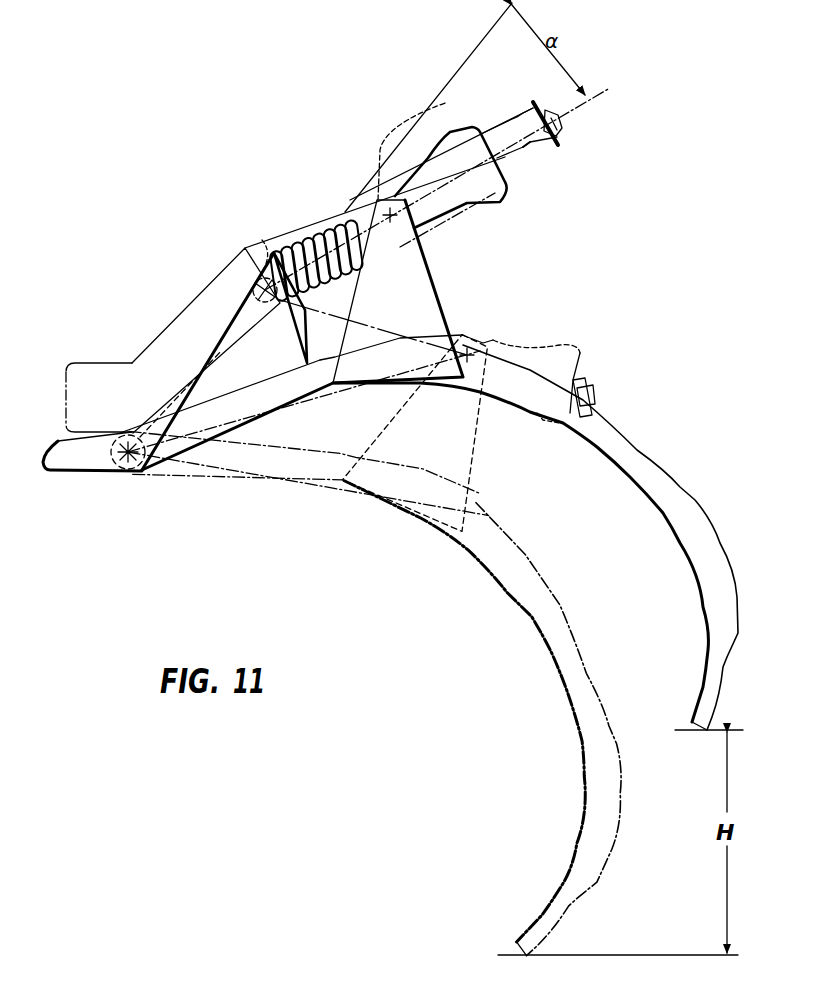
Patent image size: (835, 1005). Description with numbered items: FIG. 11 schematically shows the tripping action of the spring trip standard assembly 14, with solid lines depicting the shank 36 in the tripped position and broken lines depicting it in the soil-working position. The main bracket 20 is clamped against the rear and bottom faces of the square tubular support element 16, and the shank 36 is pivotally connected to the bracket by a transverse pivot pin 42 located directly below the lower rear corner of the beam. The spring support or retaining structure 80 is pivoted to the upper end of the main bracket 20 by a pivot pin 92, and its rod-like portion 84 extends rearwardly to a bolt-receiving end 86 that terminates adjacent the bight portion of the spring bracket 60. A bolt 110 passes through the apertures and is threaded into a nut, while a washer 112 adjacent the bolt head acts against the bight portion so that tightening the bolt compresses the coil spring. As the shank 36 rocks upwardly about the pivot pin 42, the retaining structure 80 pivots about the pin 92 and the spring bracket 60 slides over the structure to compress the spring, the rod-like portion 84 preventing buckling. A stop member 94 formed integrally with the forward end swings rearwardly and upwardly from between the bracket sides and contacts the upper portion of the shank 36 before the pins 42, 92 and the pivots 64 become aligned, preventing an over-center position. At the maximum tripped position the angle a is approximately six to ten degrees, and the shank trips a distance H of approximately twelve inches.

The spring trip standard assembly 14 is at (212, 188).
The support element 16 is at (103, 362).
The main bracket 20 is at (198, 297).
The shank 36 is at (326, 398).
The pivot pin 42 is at (138, 472).
The spring bracket 60 is at (482, 130).
The pivots 64 is at (398, 243).
The spring support or retaining structure 80 is at (538, 163).
The rod-like portion 84 is at (522, 150).
The bolt-receiving end 86 is at (540, 146).
The pivot pin 92 is at (350, 286).
The stop member 94 is at (301, 352).
The bolt 110 is at (562, 124).
The washer 112 is at (536, 102).